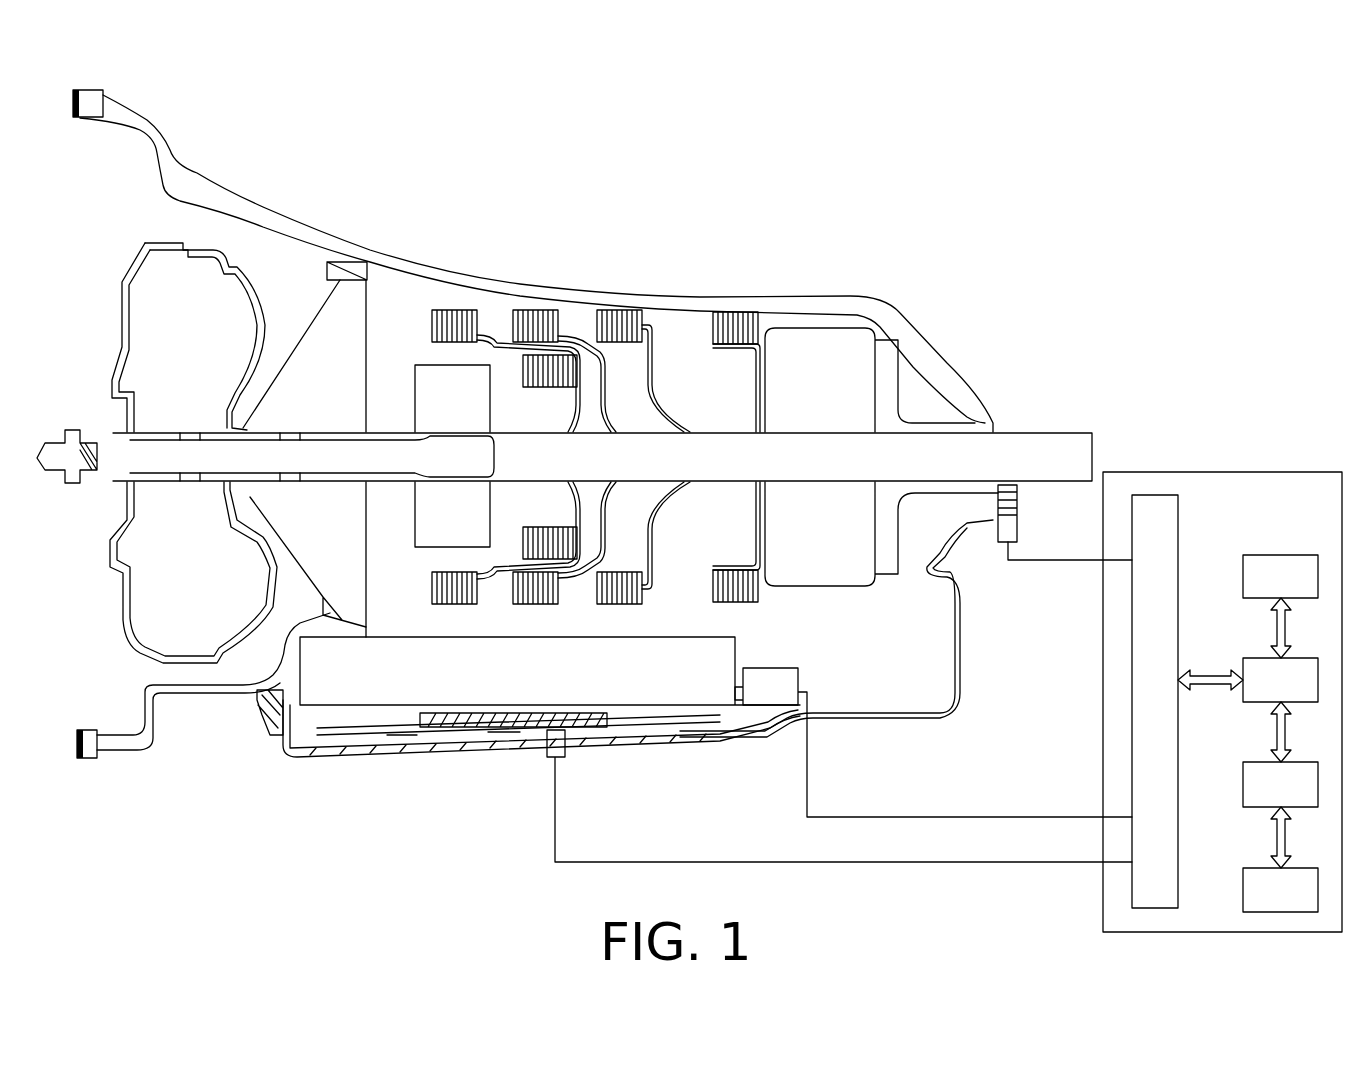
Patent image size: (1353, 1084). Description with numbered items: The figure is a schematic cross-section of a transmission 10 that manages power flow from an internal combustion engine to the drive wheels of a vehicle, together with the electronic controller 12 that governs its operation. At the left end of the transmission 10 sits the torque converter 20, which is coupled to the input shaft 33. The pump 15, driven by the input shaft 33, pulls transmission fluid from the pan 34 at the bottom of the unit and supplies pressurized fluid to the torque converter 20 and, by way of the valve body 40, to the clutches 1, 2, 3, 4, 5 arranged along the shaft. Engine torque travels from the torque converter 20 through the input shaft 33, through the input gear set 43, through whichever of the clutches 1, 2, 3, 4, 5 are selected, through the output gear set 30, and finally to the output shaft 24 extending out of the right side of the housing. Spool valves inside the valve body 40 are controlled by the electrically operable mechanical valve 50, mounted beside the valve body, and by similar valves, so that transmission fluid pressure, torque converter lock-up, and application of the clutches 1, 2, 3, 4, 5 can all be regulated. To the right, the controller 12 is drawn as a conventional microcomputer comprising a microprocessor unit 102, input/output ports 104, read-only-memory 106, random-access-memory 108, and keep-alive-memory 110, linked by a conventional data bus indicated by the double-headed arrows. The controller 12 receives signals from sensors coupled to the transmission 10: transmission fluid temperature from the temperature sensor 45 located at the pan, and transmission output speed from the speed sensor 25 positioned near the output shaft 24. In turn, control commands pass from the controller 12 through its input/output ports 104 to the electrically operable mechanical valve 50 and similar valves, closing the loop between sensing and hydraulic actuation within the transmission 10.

The transmission 10 is at (163, 140).
The torque converter 20 is at (218, 270).
The pump 15 is at (295, 358).
The input shaft 33 is at (113, 473).
The input gear set 43 is at (417, 365).
The clutch 1 is at (442, 308).
The clutch 2 is at (520, 308).
The clutch 3 is at (523, 373).
The clutch 4 is at (618, 308).
The clutch 5 is at (730, 312).
The output gear set 30 is at (780, 340).
The output shaft 24 is at (1040, 432).
The speed sensor 25 is at (1002, 545).
The pan 34 is at (277, 732).
The valve body 40 is at (283, 745).
The temperature sensor 45 is at (550, 760).
The electrically operable mechanical valve 50 is at (755, 707).
The electronic controller 12 is at (1222, 667).
The microprocessor unit 102 is at (1250, 658).
The input/output ports 104 is at (1180, 527).
The read-only-memory 106 is at (1282, 555).
The random-access-memory 108 is at (1255, 762).
The keep-alive-memory 110 is at (1255, 868).